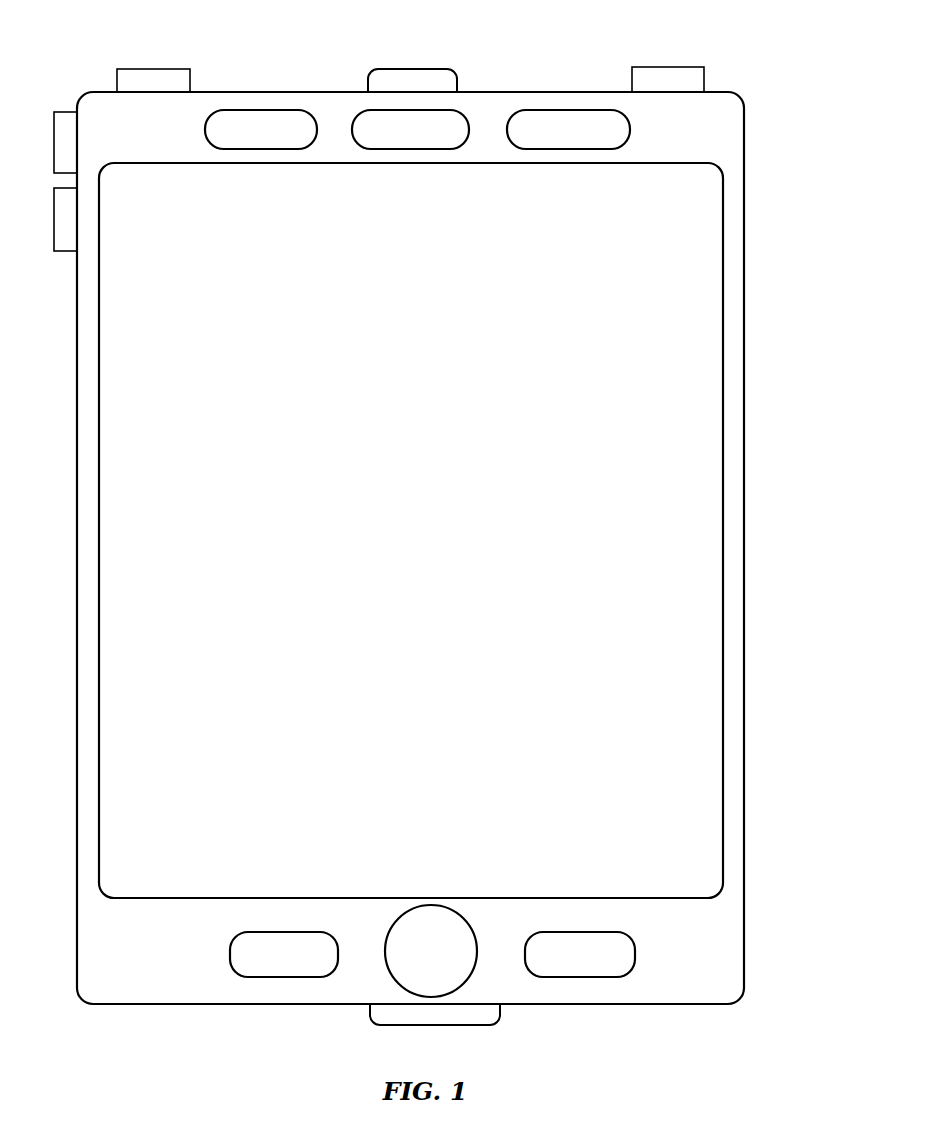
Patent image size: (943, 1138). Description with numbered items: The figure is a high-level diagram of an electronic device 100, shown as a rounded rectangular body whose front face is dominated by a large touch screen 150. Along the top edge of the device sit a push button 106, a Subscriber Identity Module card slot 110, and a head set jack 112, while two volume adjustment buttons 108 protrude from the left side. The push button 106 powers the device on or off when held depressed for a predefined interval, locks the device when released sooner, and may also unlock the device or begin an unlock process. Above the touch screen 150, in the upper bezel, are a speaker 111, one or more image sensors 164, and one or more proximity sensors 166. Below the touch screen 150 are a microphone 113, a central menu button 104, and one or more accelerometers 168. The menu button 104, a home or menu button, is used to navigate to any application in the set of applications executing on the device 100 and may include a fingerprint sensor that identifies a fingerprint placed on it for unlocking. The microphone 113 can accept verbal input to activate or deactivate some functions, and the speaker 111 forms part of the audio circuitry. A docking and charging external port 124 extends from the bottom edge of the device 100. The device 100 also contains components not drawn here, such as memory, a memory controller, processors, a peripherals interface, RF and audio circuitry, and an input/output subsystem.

The electronic device 100 is at (775, 93).
The touch screen 150 is at (724, 433).
The push button 106 is at (153, 80).
The Subscriber Identity Module (SIM) card slot 110 is at (412, 80).
The head set jack 112 is at (668, 79).
The volume adjustment buttons 108 is at (65, 181).
The speaker 111 is at (261, 129).
The image sensors 164 is at (410, 129).
The proximity sensors 166 is at (568, 129).
The microphone 113 is at (284, 954).
The menu button 104 is at (431, 951).
The accelerometers 168 is at (580, 954).
The docking/charging external port 124 is at (435, 1014).